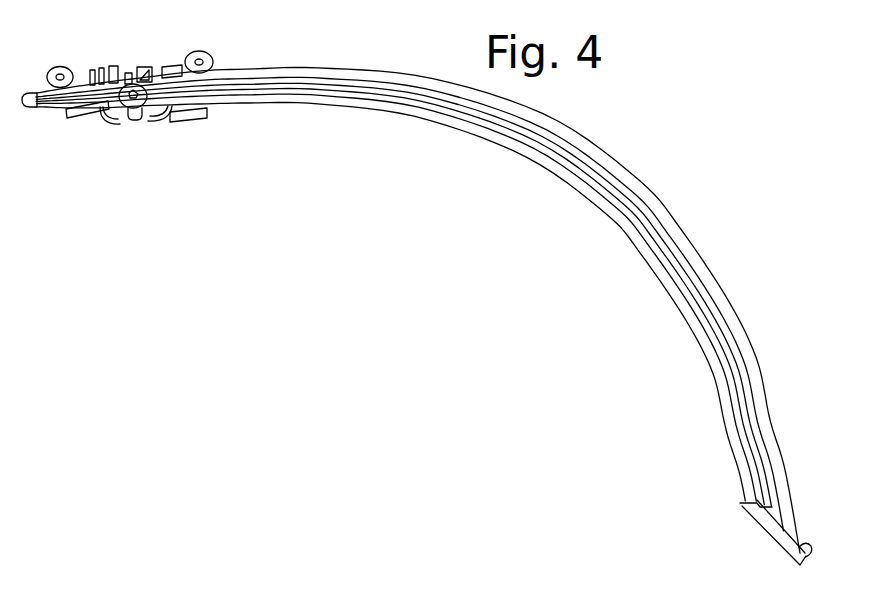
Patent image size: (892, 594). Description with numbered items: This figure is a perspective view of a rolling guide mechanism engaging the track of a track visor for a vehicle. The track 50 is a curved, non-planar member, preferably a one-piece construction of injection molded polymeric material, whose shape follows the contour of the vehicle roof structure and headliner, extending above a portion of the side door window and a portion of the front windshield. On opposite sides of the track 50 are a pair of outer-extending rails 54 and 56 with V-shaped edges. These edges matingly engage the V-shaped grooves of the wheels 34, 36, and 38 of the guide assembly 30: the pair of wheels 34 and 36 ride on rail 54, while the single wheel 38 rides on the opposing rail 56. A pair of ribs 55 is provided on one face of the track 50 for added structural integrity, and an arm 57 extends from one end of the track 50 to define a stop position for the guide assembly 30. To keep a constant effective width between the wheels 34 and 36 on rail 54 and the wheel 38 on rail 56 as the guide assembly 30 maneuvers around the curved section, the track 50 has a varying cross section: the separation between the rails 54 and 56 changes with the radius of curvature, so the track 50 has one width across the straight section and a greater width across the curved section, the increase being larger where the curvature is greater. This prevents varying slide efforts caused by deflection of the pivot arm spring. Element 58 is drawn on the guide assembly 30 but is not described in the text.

The guide assembly 30 is at (145, 57).
The wheel 34 is at (206, 52).
The wheel 36 is at (68, 68).
The wheel 38 is at (116, 130).
The track 50 is at (701, 256).
The rail 54 is at (292, 63).
The ribs 55 is at (773, 514).
The rail 56 is at (266, 106).
The arm 57 is at (812, 546).
The hub stem 58 is at (154, 134).